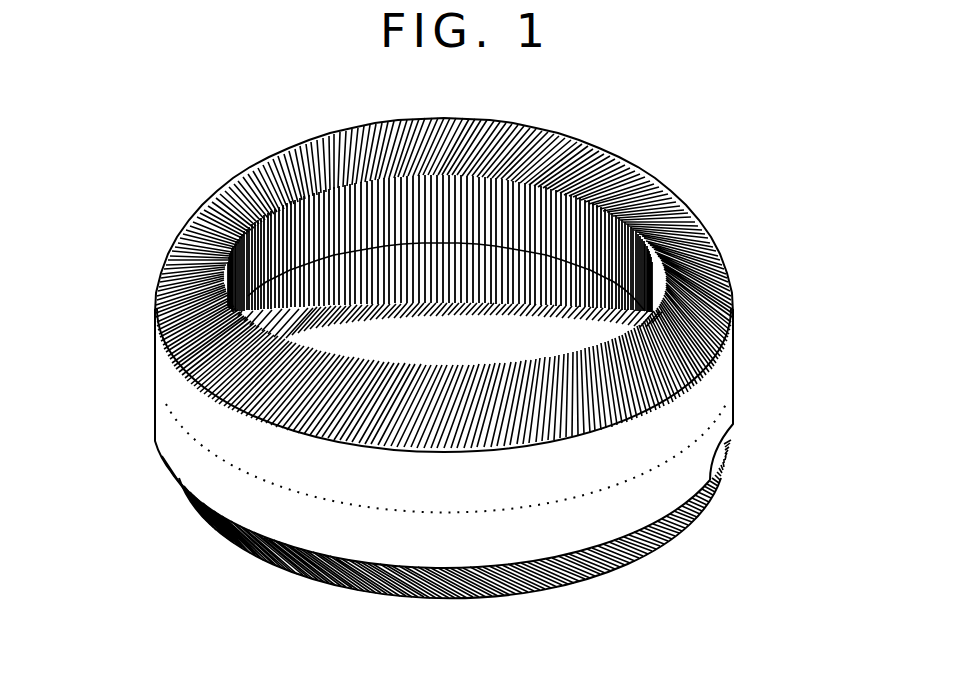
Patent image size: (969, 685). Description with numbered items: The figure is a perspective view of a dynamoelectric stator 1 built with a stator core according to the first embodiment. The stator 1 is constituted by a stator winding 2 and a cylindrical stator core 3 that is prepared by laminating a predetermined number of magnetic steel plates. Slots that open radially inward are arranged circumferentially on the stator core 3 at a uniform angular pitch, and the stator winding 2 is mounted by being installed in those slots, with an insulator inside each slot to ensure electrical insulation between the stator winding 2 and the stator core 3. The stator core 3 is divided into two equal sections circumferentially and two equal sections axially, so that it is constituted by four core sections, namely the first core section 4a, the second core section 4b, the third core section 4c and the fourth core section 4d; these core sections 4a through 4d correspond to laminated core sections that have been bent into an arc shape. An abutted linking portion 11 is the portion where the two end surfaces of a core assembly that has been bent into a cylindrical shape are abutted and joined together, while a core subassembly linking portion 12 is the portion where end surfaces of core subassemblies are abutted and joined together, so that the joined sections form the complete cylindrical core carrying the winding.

The stator 1 is at (122, 109).
The stator winding 2 is at (677, 191).
The stator core 3 is at (738, 369).
The first core section 4a is at (188, 493).
The second core section 4b is at (183, 428).
The third core section 4c is at (150, 408).
The fourth core section 4d is at (155, 330).
The abutted linking portion 11 is at (155, 367).
The core subassembly linking portion 12 is at (718, 288).